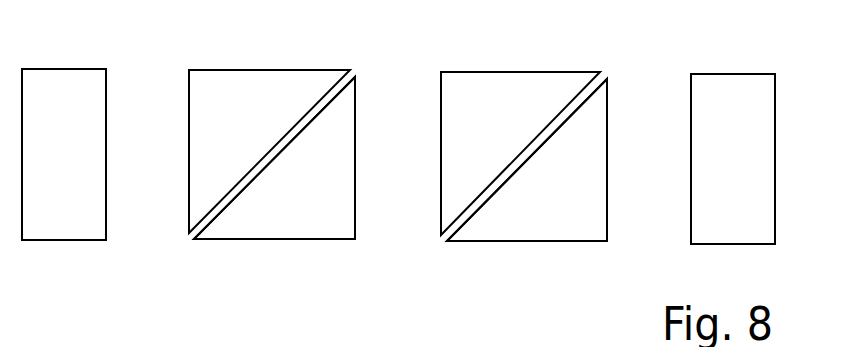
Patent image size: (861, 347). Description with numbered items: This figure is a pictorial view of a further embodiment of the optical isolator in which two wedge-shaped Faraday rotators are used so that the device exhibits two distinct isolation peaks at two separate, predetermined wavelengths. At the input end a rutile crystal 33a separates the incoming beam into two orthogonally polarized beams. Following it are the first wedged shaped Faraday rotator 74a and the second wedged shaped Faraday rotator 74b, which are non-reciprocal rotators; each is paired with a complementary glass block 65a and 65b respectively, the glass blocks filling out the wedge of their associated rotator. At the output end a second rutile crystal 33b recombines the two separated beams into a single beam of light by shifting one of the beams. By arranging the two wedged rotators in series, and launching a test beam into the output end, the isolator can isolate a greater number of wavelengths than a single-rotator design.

The rutile crystal 33a is at (61, 76).
The second rutile crystal 33b is at (732, 82).
The wedged shaped Faraday rotator 74a is at (256, 75).
The wedged shaped Faraday rotator 74b is at (505, 82).
The complementary glass block 65a is at (290, 230).
The complementary glass block 65b is at (543, 233).